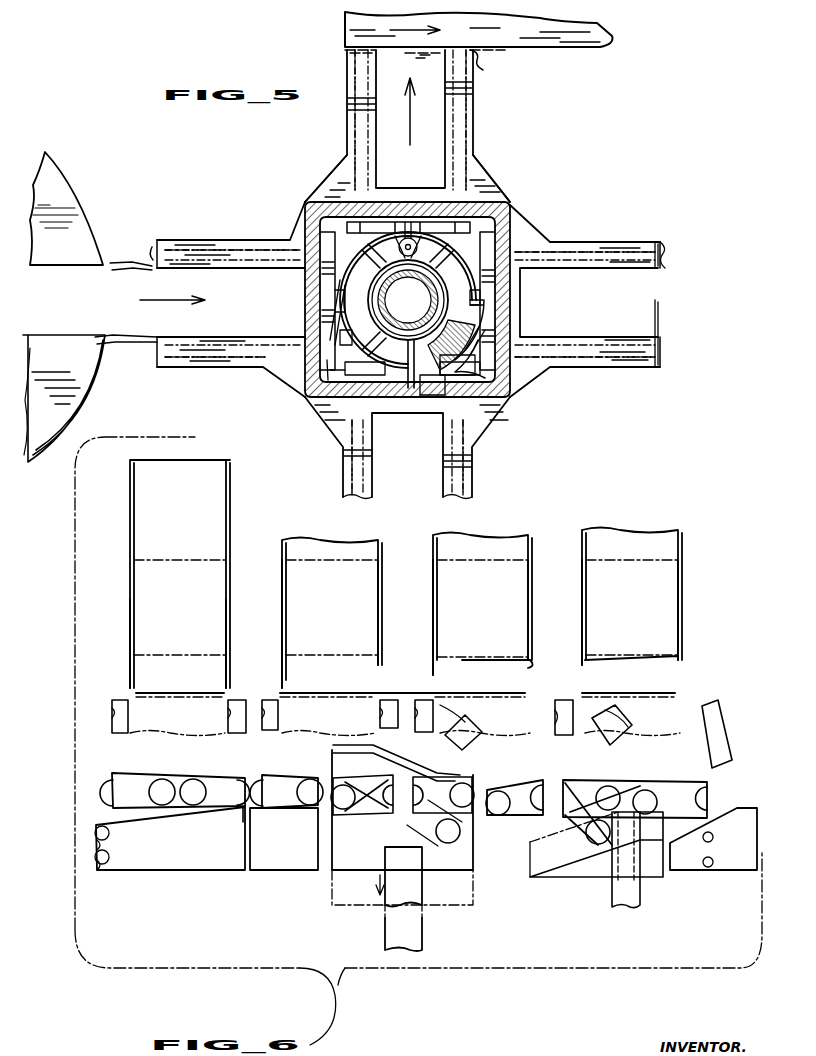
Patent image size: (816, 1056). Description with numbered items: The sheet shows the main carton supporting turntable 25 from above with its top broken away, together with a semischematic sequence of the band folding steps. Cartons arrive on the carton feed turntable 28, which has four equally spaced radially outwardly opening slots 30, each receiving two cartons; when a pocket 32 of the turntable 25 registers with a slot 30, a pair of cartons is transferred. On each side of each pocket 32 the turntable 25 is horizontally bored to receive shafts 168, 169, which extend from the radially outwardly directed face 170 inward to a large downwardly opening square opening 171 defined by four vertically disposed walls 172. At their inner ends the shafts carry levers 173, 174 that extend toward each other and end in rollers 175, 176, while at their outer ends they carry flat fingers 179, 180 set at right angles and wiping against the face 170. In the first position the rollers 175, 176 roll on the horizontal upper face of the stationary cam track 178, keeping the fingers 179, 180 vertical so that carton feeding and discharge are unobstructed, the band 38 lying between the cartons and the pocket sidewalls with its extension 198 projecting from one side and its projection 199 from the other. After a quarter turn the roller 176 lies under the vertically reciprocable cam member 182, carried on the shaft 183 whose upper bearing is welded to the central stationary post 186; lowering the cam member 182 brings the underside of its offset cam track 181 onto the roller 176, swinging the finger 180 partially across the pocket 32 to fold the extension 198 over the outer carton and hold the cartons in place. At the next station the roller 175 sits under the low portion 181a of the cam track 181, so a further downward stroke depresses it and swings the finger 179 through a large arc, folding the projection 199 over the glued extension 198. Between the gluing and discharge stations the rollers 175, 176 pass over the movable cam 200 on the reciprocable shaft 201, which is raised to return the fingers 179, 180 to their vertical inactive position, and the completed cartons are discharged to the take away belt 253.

In FIG. 5, the take away belt 253 is at (567, 40).
In FIG. 5, the flat finger 180 is at (345, 52).
In FIG. 6, the flat finger 180 is at (240, 712).
In FIG. 5, the flat finger 179 is at (430, 56).
In FIG. 6, the flat finger 179 is at (112, 722).
In FIG. 5, the radially outwardly directed face 170 is at (153, 245).
In FIG. 5, the pocket 32 is at (435, 108).
In FIG. 6, the pocket 32 is at (140, 708).
In FIG. 5, the shaft 169 is at (354, 124).
In FIG. 6, the shaft 169 is at (243, 810).
In FIG. 5, the shaft 168 is at (470, 125).
In FIG. 6, the shaft 168 is at (113, 793).
In FIG. 5, the vertically disposed wall 172 is at (315, 432).
In FIG. 5, the lever 174 is at (390, 215).
In FIG. 6, the lever 174 is at (230, 785).
In FIG. 5, the lever 173 is at (420, 215).
In FIG. 6, the lever 173 is at (140, 783).
In FIG. 5, the square opening 171 is at (492, 200).
In FIG. 5, the turntable 25 is at (548, 220).
In FIG. 5, the carton feed turntable 28 is at (86, 190).
In FIG. 5, the carton receiving slot 30 is at (52, 292).
In FIG. 5, the roller 175 is at (405, 360).
In FIG. 6, the roller 175 is at (165, 780).
In FIG. 5, the roller 176 is at (330, 318).
In FIG. 6, the roller 176 is at (205, 774).
In FIG. 5, the central stationary post 186 is at (441, 300).
In FIG. 5, the cam member 182 is at (525, 375).
In FIG. 6, the cam member 182 is at (485, 854).
In FIG. 5, the shaft 183 is at (460, 395).
In FIG. 6, the shaft 183 is at (422, 885).
In FIG. 5, the stationary cam track 178 is at (335, 370).
In FIG. 6, the stationary cam track 178 is at (426, 838).
In FIG. 6, the band 38 is at (388, 602).
In FIG. 6, the extension 198 is at (230, 672).
In FIG. 6, the projection 199 is at (130, 672).
In FIG. 6, the offset cam track 181 is at (390, 758).
In FIG. 6, the low portion 181a is at (439, 802).
In FIG. 6, the movable cam 200 is at (567, 891).
In FIG. 6, the reciprocable shaft 201 is at (640, 897).